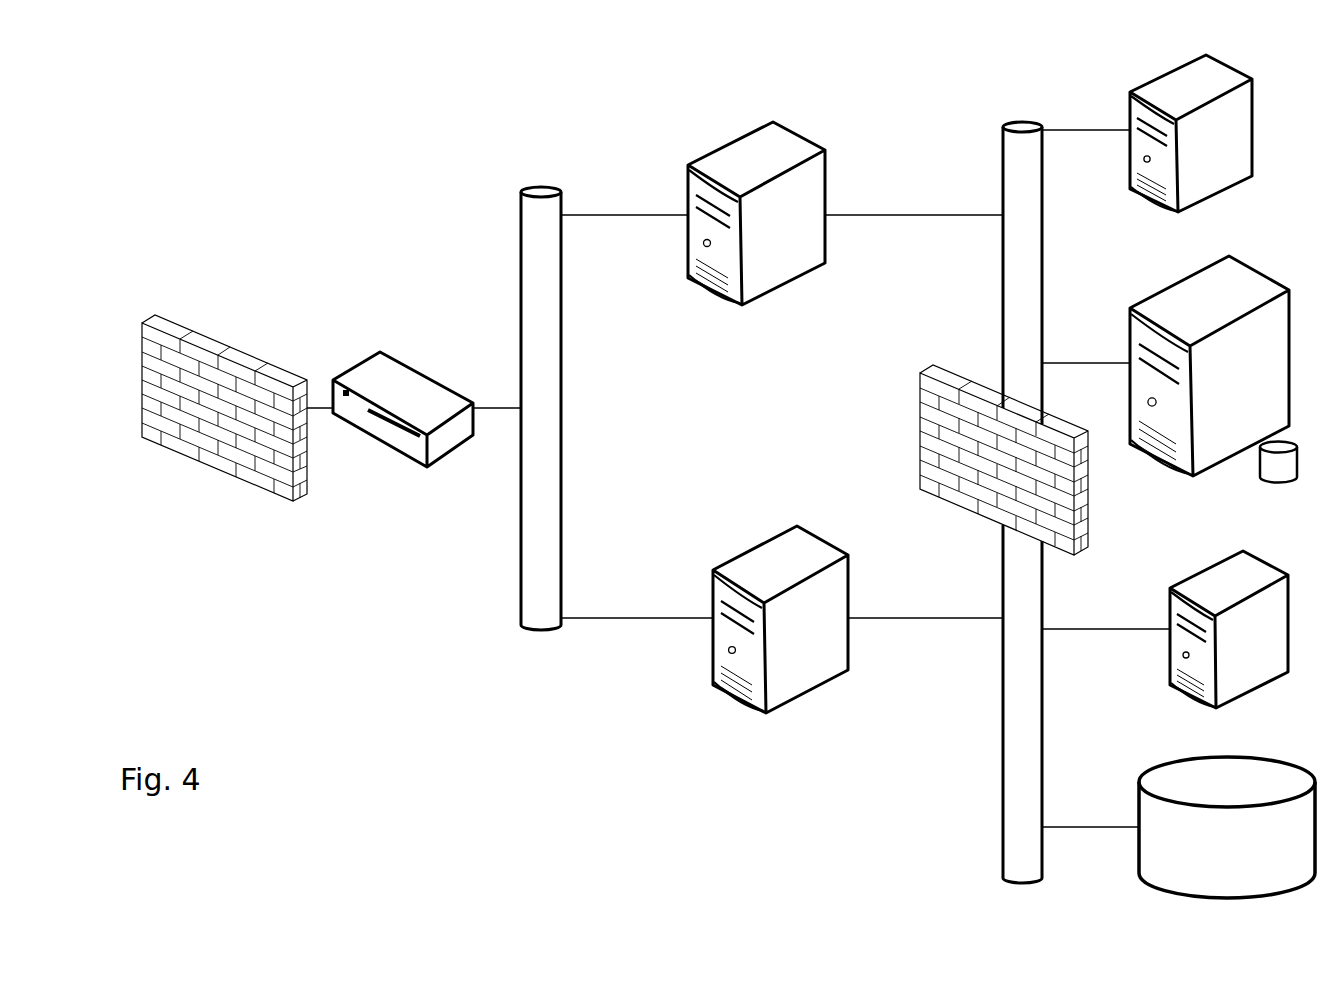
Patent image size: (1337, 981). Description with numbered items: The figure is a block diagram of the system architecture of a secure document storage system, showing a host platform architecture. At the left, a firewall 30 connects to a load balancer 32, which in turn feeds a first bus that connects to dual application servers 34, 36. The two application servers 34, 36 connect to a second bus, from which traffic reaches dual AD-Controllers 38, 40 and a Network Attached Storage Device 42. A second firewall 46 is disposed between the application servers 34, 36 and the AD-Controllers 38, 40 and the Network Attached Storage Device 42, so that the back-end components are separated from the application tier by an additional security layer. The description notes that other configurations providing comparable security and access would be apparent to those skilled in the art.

The firewall 30 is at (211, 313).
The load balancer 32 is at (409, 334).
The application server 34 is at (744, 139).
The application server 36 is at (718, 552).
The AD-Controller 38 is at (1114, 105).
The AD-Controller 40 is at (1134, 290).
The Network Attached Storage Device 42 is at (1191, 866).
The second firewall 46 is at (953, 437).